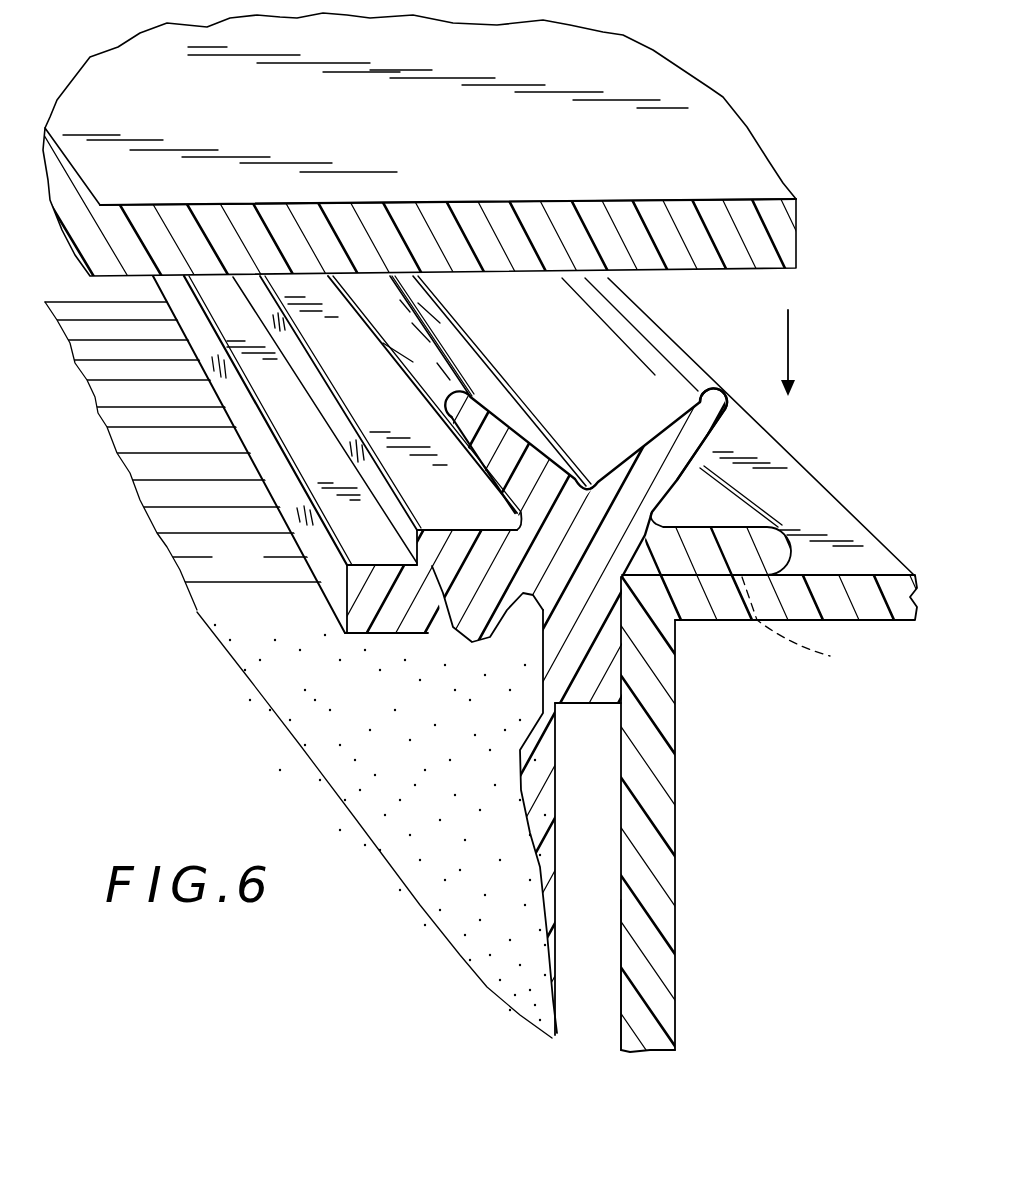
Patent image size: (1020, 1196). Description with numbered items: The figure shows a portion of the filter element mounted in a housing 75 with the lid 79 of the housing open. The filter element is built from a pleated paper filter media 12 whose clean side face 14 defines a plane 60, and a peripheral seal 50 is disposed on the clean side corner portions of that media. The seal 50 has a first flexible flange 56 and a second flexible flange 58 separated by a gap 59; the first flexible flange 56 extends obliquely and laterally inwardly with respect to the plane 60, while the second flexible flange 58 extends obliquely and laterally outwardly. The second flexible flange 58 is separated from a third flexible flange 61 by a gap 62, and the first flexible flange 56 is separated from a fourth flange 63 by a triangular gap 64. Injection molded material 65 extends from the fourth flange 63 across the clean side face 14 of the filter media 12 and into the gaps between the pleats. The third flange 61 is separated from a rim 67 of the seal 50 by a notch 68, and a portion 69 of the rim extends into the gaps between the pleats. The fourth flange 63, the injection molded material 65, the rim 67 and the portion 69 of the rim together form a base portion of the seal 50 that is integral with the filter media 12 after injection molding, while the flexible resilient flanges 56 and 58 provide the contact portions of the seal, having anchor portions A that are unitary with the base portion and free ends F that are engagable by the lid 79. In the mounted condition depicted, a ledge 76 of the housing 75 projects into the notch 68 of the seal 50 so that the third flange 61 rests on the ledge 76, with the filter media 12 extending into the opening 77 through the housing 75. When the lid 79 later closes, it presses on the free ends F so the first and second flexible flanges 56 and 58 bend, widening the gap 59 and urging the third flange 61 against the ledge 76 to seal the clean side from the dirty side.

The pleated paper filter media 12 is at (418, 820).
The clean side face 14 is at (166, 491).
The peripheral seal 50 is at (506, 400).
The first flexible flange 56 is at (510, 427).
The second flexible flange 58 is at (663, 430).
The gap 59 is at (557, 413).
The plane 60 is at (221, 572).
The third flexible flange 61 is at (772, 556).
The gap 62 is at (698, 496).
The fourth flange 63 is at (432, 566).
The triangular gap 64 is at (429, 508).
The injection molded material 65 is at (346, 548).
The rim 67 is at (593, 692).
The notch 68 is at (810, 625).
The portion of the rim 69 is at (543, 832).
The housing 75 is at (822, 737).
The ledge 76 is at (700, 625).
The opening 77 is at (572, 953).
The lid 79 is at (768, 160).
The anchor portions A is at (590, 485).
The free ends F is at (465, 388).